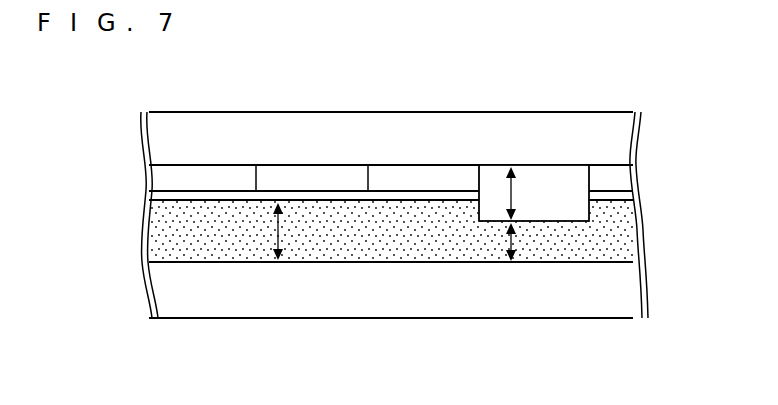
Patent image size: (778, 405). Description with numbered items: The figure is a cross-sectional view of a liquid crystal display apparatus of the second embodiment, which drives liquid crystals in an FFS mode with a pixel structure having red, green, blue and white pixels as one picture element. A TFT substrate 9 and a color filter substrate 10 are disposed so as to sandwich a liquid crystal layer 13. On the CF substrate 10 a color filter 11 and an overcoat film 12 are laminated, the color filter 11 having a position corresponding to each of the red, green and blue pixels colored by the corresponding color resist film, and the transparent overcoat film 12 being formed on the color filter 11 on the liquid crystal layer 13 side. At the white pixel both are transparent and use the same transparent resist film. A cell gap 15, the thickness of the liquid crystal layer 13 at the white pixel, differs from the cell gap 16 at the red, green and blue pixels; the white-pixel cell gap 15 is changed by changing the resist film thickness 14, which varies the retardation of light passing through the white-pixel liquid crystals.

The TFT substrate 9 is at (165, 296).
The color filter (CF) substrate 10 is at (165, 139).
The color filter 11 is at (165, 178).
The overcoat film 12 is at (165, 196).
The liquid crystal layer 13 is at (165, 250).
The resist film thickness 14 is at (509, 193).
The cell gap 15 is at (513, 241).
The cell gap 16 is at (280, 229).